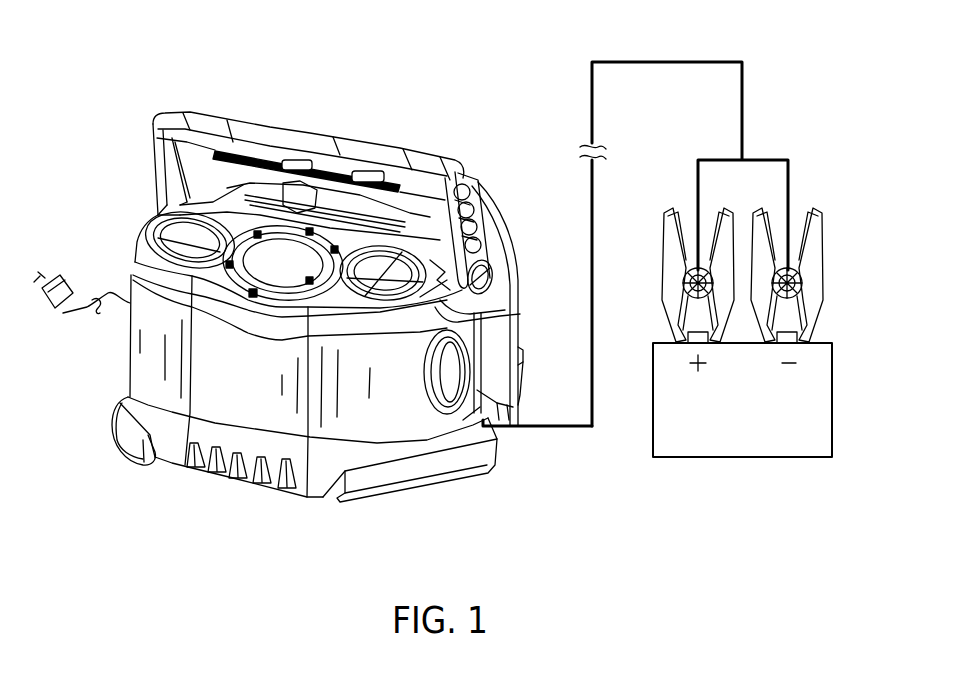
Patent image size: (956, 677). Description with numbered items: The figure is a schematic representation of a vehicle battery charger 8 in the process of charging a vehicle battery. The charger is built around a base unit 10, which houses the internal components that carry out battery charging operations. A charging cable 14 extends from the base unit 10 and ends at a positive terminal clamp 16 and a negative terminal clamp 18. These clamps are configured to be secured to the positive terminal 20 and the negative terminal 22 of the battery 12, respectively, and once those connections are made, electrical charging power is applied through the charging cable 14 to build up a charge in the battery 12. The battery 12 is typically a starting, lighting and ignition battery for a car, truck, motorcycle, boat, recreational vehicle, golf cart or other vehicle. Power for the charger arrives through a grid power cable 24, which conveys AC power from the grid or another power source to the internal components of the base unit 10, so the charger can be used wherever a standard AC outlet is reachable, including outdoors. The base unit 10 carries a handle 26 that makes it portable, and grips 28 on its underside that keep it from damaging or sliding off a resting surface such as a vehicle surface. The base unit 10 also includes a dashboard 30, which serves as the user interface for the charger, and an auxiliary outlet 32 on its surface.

The charging system 8 is at (516, 97).
The base unit 10 is at (92, 160).
The battery 12 is at (740, 458).
The charging cable 14 is at (671, 62).
The positive terminal clamp 16 is at (664, 234).
The negative terminal clamp 18 is at (820, 234).
The positive terminal 20 is at (682, 338).
The negative terminal 22 is at (815, 338).
The grid power cable 24 is at (87, 308).
The handle 26 is at (321, 136).
The grips 28 is at (132, 460).
The dashboard 30 is at (520, 315).
The auxiliary outlet 32 is at (455, 387).